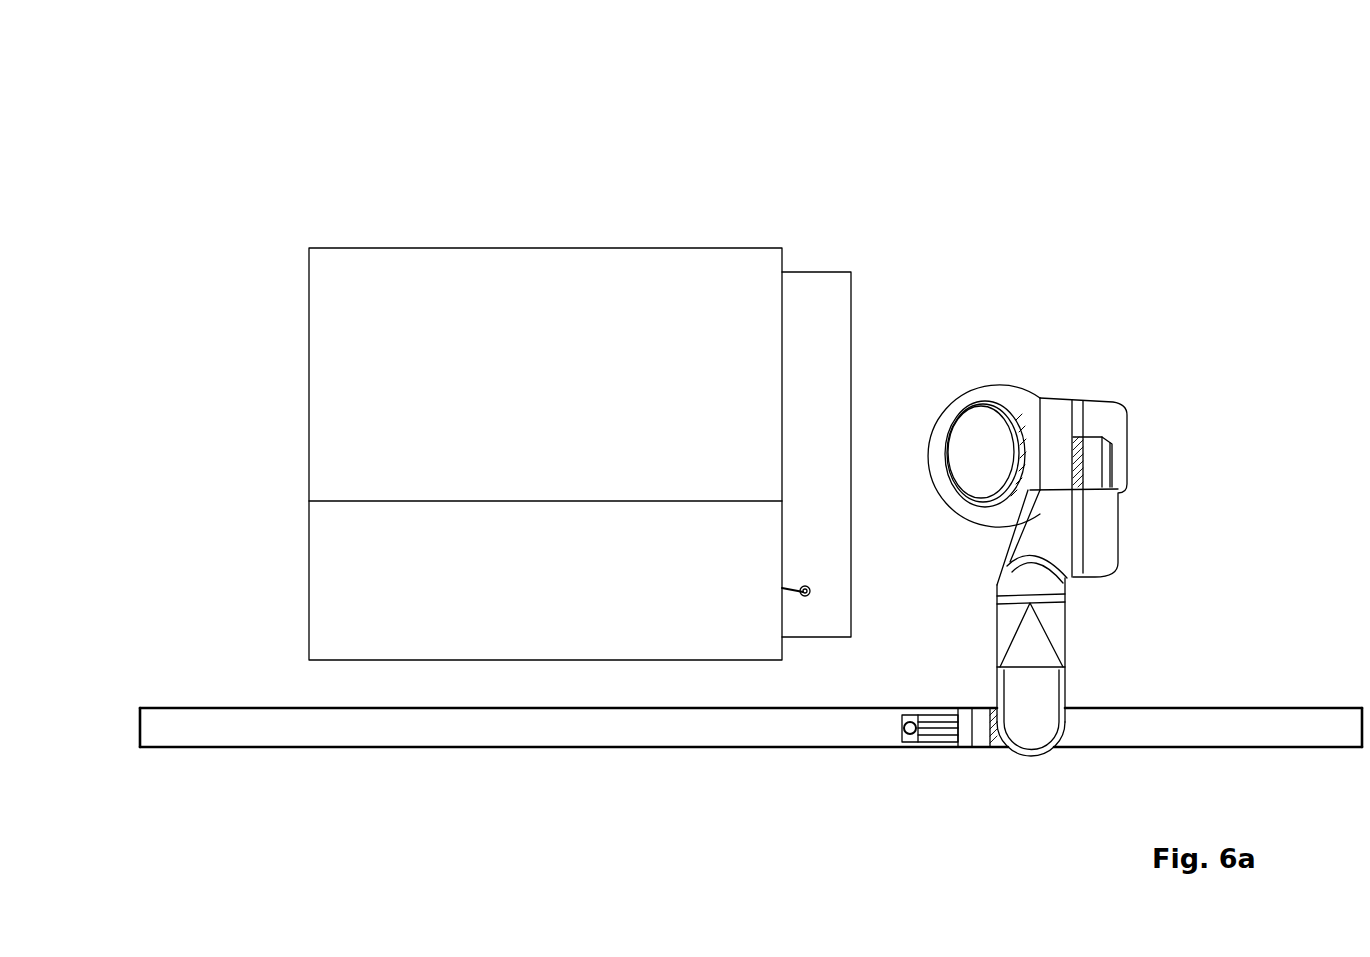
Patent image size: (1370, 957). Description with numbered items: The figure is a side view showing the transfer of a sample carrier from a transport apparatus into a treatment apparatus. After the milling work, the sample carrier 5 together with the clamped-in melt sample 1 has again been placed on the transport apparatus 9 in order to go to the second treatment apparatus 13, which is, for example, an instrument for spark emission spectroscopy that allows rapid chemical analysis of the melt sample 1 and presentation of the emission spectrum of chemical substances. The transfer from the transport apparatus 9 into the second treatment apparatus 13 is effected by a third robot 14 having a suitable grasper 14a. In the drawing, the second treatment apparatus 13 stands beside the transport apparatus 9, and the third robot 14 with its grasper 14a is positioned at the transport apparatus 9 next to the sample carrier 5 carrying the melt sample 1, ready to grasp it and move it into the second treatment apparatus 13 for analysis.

The second treatment apparatus 13 is at (318, 241).
The third robot 14 is at (1022, 415).
The grasper 14a is at (983, 722).
The transport apparatus 9 is at (1297, 722).
The sample carrier 5 is at (909, 794).
The melt sample 1 is at (908, 747).